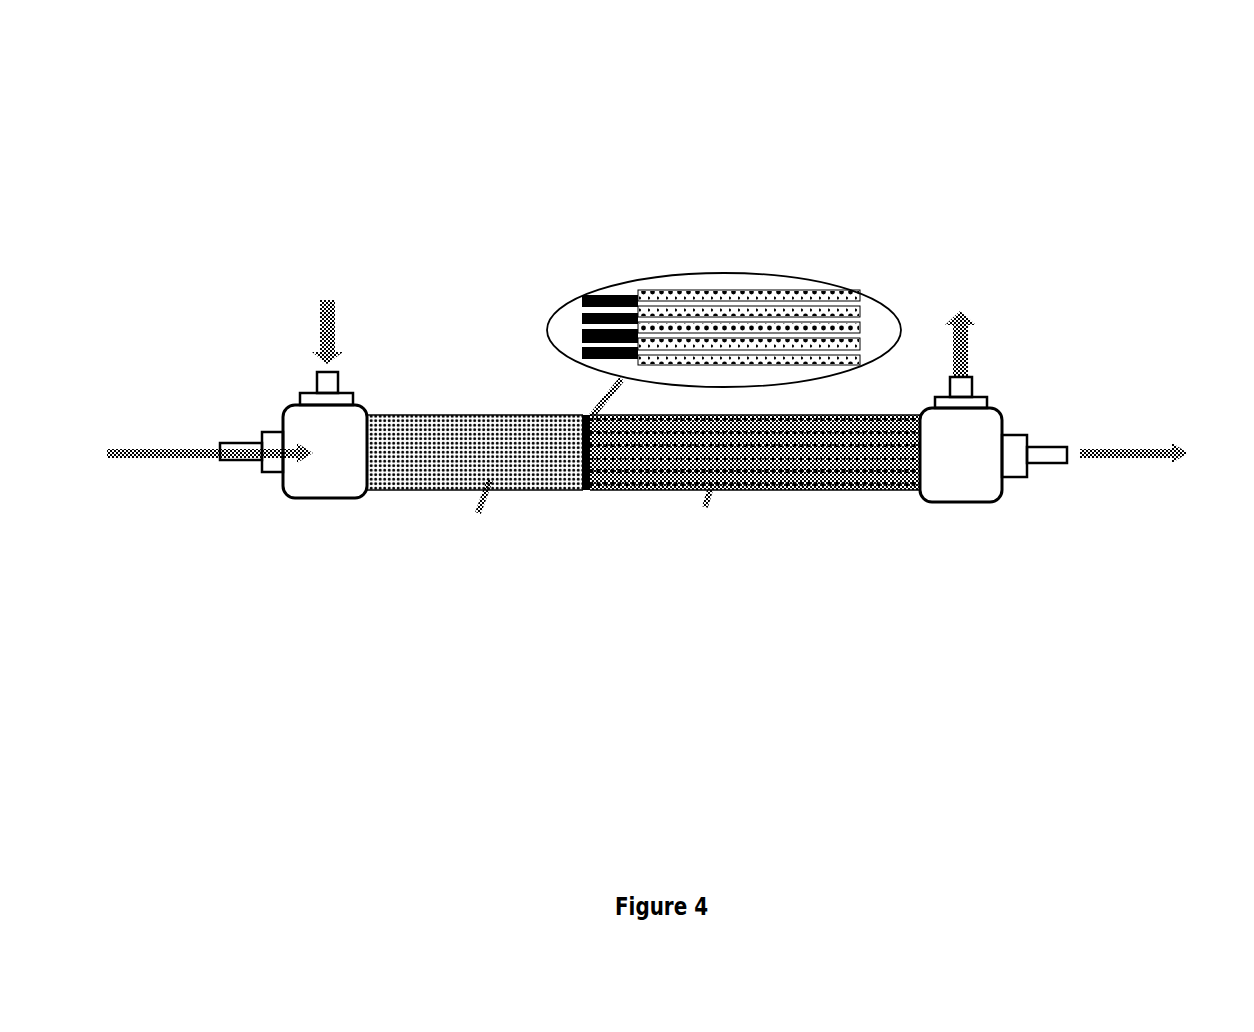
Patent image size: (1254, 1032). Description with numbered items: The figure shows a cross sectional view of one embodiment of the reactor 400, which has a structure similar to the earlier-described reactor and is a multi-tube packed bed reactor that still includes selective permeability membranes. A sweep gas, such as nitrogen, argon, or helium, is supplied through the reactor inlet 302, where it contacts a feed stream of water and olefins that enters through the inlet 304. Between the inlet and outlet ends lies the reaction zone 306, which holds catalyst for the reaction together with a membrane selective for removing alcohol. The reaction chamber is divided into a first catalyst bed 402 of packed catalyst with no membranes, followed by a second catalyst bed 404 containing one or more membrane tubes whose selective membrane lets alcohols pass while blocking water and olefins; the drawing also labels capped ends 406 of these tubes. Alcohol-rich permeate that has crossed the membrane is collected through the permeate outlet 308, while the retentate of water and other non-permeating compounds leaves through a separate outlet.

The reactor 400 is at (160, 40).
The reactor inlet 302 is at (314, 386).
The inlet 304 is at (253, 463).
The reaction zone 306 is at (1040, 464).
The permeate outlet 308 is at (973, 380).
The first catalyst bed 402 is at (412, 488).
The second catalyst bed 404 is at (857, 491).
The capped ends 406 is at (587, 491).